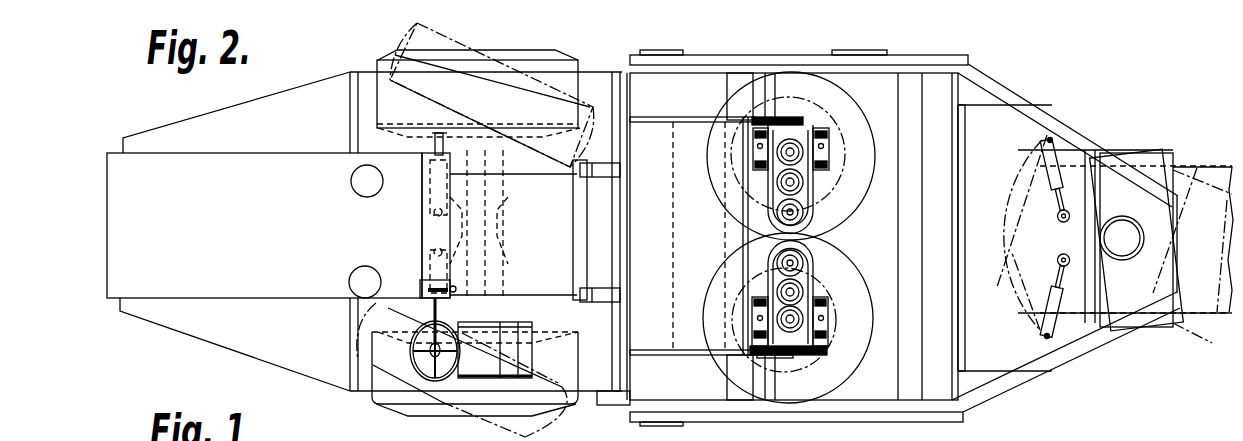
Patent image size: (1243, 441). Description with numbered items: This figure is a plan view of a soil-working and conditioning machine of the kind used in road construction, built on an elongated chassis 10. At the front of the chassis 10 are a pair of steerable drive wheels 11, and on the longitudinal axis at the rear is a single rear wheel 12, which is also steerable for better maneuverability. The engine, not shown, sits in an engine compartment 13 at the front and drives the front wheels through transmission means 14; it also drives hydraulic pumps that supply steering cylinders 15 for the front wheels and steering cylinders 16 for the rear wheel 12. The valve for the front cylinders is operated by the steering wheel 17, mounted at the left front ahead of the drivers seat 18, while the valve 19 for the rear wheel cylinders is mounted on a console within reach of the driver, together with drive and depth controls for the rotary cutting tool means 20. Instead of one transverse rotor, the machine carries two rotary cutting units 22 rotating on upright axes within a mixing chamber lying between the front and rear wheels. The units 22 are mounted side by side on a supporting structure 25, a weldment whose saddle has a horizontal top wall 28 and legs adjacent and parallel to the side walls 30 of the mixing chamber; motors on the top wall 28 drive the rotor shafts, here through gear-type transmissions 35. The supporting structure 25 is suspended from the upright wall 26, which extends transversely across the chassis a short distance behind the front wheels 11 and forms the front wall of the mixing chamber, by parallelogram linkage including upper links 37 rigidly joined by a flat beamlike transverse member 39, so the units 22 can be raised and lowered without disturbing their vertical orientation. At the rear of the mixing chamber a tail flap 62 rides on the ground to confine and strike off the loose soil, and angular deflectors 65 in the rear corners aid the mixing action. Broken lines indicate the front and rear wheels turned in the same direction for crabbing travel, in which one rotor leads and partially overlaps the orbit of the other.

The elongated chassis 10 is at (587, 48).
The steerable drive wheels 11 is at (387, 58).
The rear wheel 12 is at (1200, 167).
The engine compartment 13 is at (135, 219).
The transmission means 14 is at (503, 213).
The steering cylinders 15 is at (430, 197).
The steering cylinders 16 is at (1042, 173).
The steering wheel 17 is at (451, 389).
The drivers seat 18 is at (507, 326).
The valve 19 is at (420, 293).
The rotary cutting tool means 20 is at (851, 220).
The rotary cutting units 22 is at (837, 97).
The supporting structure 25 is at (763, 242).
The upright wall 26 is at (627, 249).
The top wall 28 is at (820, 273).
The side walls 30 is at (747, 64).
The gear-type transmissions 35 is at (777, 191).
The upper links 37 is at (681, 95).
The transverse member 39 is at (680, 183).
The tail flap 62 is at (963, 341).
The angular deflectors 65 is at (880, 83).